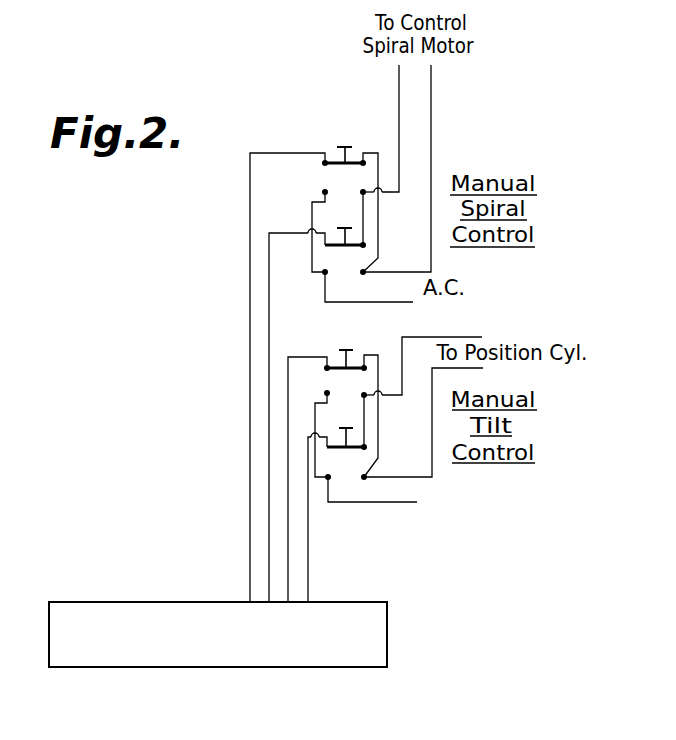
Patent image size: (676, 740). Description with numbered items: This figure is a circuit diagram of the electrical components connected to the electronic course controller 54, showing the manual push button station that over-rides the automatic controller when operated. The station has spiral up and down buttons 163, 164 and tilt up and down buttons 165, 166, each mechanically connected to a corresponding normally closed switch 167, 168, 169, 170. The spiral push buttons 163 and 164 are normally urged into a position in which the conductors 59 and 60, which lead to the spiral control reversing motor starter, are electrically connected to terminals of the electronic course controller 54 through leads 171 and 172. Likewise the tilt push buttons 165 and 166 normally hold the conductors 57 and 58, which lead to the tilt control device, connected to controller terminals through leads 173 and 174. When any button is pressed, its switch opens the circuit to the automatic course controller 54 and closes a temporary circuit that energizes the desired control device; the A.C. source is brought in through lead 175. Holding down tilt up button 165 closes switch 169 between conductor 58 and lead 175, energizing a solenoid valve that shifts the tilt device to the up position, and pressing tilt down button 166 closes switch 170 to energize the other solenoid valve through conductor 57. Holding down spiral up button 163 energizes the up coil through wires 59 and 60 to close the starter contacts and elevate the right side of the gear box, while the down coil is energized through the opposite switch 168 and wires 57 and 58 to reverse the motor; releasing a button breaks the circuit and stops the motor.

The automatic course controller 54 is at (218, 652).
The conductor 57 is at (444, 422).
The conductor 58 is at (436, 352).
The conductor 59 is at (376, 128).
The conductor 60 is at (419, 168).
The spiral up push button 163 is at (334, 149).
The spiral down push button 164 is at (316, 233).
The tilt up push button 165 is at (363, 356).
The tilt down push button 166 is at (376, 440).
The normally closed switch 167 is at (304, 176).
The normally closed switch 168 is at (390, 233).
The normally closed switch 169 is at (342, 340).
The normally closed switch 170 is at (394, 457).
The lead 171 is at (255, 377).
The lead 172 is at (297, 415).
The lead 173 is at (301, 467).
The lead 174 is at (340, 517).
The lead 175 is at (378, 387).